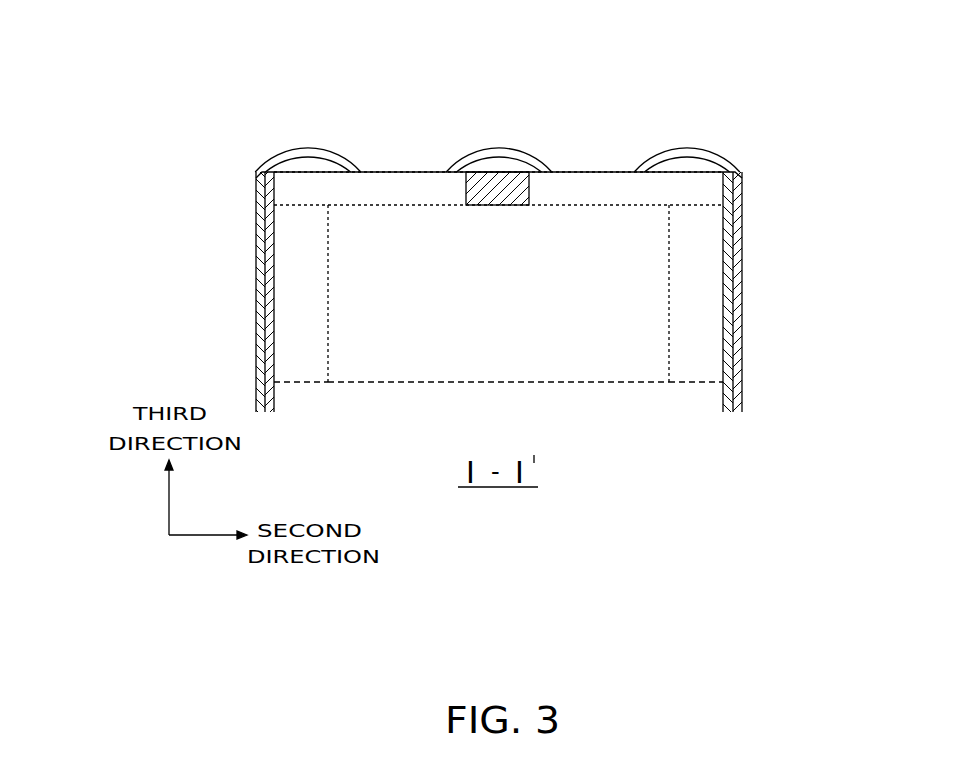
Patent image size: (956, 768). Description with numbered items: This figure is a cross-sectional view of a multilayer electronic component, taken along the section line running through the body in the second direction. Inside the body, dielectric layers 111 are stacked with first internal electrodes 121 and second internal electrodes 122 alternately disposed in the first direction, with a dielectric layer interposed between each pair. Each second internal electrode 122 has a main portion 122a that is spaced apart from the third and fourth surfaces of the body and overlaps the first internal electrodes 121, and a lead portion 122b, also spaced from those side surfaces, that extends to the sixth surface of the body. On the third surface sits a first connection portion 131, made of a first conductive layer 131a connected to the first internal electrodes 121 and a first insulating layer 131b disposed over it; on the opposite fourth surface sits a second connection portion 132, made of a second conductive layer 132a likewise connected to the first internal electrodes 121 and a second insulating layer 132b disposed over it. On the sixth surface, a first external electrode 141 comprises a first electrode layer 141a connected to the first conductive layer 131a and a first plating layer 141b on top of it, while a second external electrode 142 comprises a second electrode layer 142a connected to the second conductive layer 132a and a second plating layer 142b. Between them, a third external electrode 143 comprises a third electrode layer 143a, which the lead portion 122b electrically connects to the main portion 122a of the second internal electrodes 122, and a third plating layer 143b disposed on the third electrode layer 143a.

The dielectric layer 111 is at (370, 183).
The first internal electrode 121 is at (301, 233).
The second internal electrode 122 is at (498, 201).
The main portion 122a is at (489, 247).
The lead portion 122b is at (517, 195).
The first connection portion 131 is at (178, 292).
The first conductive layer 131a is at (268, 246).
The first insulating layer 131b is at (259, 306).
The second connection portion 132 is at (820, 292).
The second conductive layer 132a is at (740, 246).
The second insulating layer 132b is at (732, 306).
The first external electrode 141 is at (226, 144).
The first electrode layer 141a is at (278, 164).
The first plating layer 141b is at (293, 150).
The second external electrode 142 is at (769, 146).
The second electrode layer 142a is at (716, 164).
The second plating layer 142b is at (703, 150).
The third external electrode 143 is at (469, 96).
The third electrode layer 143a is at (458, 160).
The third plating layer 143b is at (481, 158).